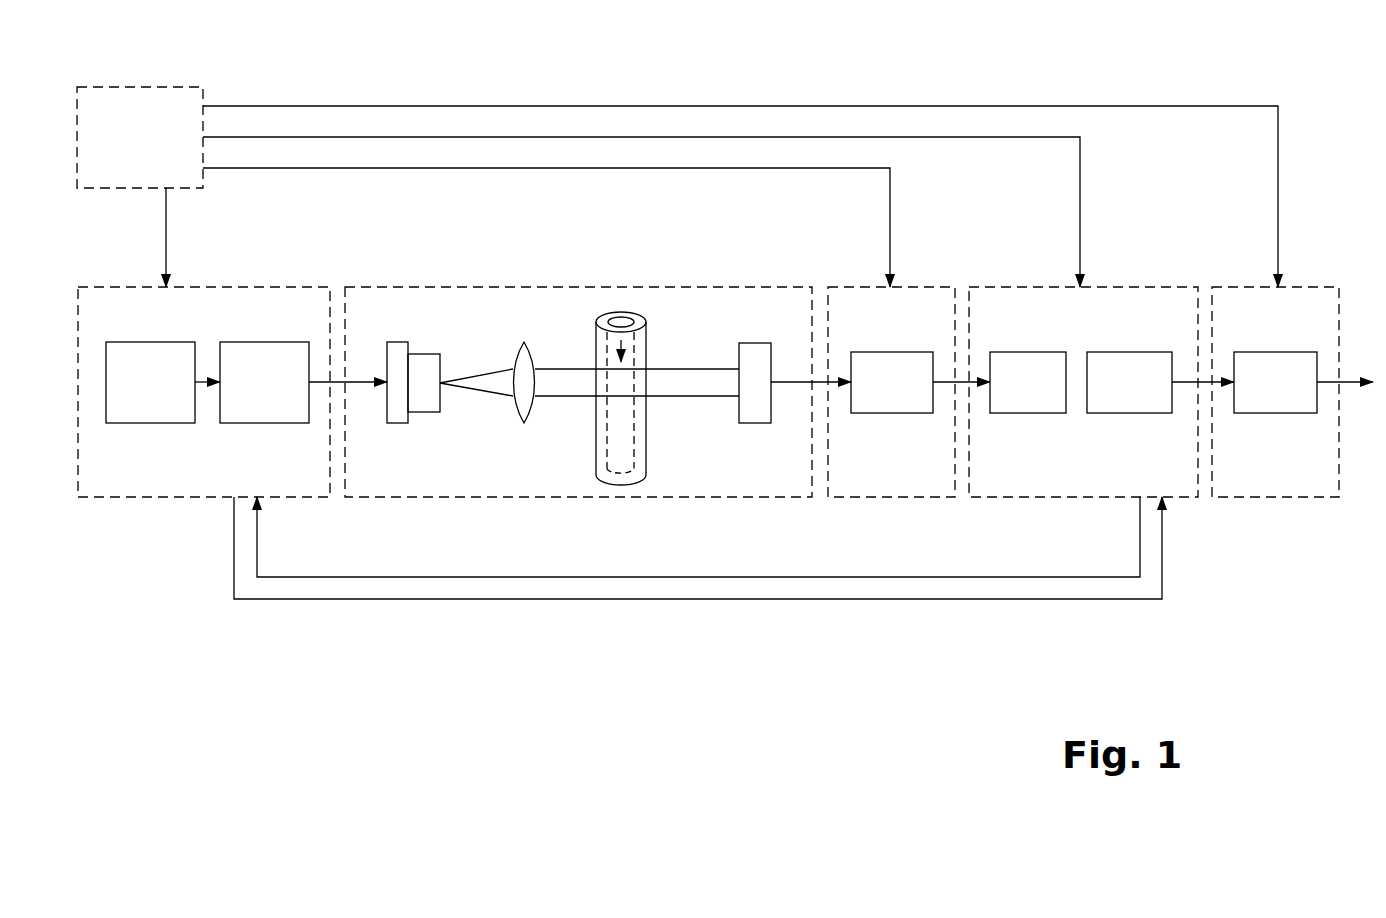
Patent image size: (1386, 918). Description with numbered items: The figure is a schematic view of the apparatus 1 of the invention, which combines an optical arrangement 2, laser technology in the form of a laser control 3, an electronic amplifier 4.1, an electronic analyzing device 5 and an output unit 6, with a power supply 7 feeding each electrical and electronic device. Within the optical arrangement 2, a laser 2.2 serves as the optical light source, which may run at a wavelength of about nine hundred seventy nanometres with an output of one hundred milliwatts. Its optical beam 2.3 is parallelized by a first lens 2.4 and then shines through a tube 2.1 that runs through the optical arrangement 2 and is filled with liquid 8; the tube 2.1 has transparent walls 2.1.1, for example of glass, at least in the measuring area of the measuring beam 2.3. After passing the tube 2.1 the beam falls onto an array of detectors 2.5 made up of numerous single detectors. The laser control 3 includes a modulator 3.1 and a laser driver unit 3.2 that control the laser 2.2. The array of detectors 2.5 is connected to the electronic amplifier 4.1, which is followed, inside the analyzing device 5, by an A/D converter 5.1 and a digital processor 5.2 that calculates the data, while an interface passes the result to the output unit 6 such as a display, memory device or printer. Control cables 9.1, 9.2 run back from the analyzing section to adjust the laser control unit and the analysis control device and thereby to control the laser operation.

The apparatus 1 is at (197, 636).
The optical arrangement 2 is at (546, 473).
The tube 2.1 is at (652, 342).
The transparent walls 2.1.1 is at (602, 343).
The laser 2.2 is at (425, 367).
The optical beam 2.3 is at (480, 383).
The first lens 2.4 is at (524, 358).
The array of detectors 2.5 is at (757, 353).
The laser control 3 is at (136, 492).
The modulator 3.1 is at (130, 353).
The laser driver unit 3.2 is at (278, 353).
The electronic amplifier 4.1 is at (900, 404).
The electronic analyzing device 5 is at (1071, 478).
The A/D converter 5.1 is at (1018, 368).
The digital processor 5.2 is at (1135, 368).
The output unit 6 is at (1275, 478).
The power supply 7 is at (171, 98).
The liquid 8 is at (623, 464).
The control cable 9.1 is at (722, 600).
The control cable 9.2 is at (797, 578).